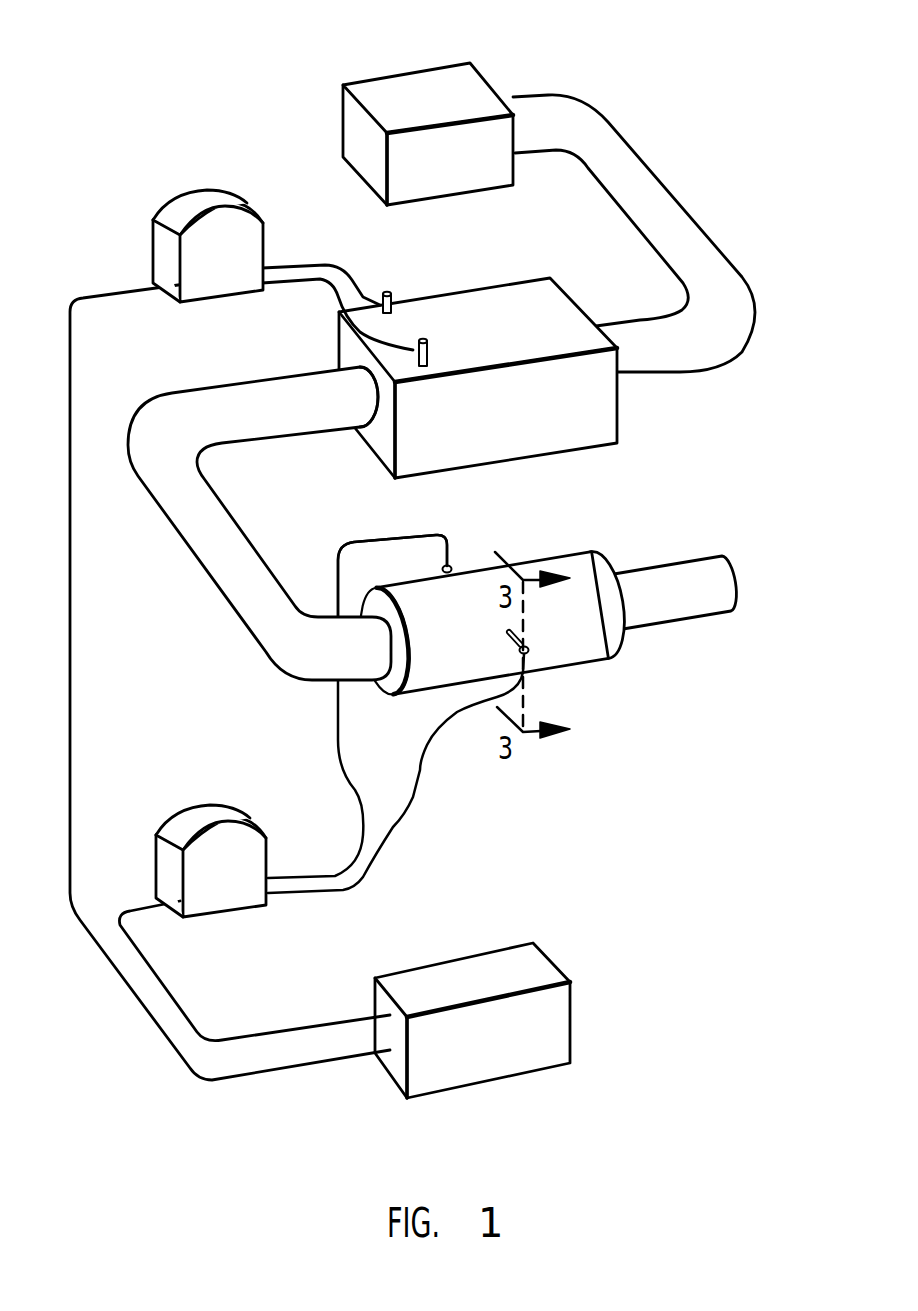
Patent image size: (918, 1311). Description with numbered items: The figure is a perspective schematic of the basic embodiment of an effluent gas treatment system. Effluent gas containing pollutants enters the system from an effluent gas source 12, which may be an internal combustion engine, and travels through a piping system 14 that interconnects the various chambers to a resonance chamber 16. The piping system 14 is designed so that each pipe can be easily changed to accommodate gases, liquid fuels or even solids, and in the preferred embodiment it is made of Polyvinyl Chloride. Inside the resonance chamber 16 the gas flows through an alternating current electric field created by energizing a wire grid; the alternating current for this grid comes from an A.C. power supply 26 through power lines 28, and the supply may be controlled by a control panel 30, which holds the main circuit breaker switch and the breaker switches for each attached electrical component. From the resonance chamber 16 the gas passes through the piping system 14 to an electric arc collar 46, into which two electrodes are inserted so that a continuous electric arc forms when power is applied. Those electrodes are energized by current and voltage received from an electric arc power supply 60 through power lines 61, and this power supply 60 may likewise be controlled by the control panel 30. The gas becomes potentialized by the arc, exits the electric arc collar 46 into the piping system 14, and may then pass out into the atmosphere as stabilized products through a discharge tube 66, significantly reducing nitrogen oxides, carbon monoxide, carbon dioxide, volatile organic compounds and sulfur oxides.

The effluent gas source 12 is at (418, 97).
The piping system 14 is at (602, 135).
The resonance chamber 16 is at (567, 403).
The A.C. power supply 26 is at (185, 212).
The power lines 28 is at (305, 264).
The control panel 30 is at (490, 1042).
The electric arc collar 46 is at (553, 642).
The electric arc power supply 60 is at (220, 887).
The power lines 61 is at (406, 533).
The discharge tube 66 is at (660, 600).